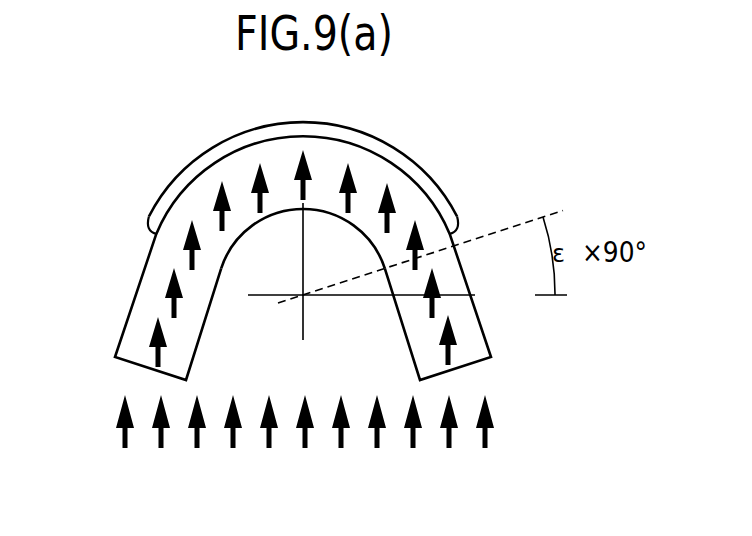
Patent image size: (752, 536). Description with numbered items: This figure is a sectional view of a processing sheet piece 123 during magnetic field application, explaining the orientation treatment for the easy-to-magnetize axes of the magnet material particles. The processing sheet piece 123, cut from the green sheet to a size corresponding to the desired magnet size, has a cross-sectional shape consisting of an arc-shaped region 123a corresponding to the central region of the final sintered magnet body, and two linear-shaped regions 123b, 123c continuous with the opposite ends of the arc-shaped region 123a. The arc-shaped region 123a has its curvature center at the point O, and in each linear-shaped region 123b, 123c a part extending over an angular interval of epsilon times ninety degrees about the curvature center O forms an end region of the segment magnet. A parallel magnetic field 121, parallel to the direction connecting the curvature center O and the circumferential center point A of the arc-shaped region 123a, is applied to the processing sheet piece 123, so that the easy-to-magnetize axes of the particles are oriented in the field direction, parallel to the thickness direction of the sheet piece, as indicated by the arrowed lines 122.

The parallel magnetic field 121 is at (125, 432).
The arrowed lines 122 is at (215, 217).
The processing sheet piece 123 is at (400, 168).
The arc-shaped region 123a is at (345, 124).
The linear-shaped region 123b is at (154, 234).
The linear-shaped region 123c is at (493, 357).
The circumferential center point A is at (312, 134).
The curvature center O is at (305, 297).